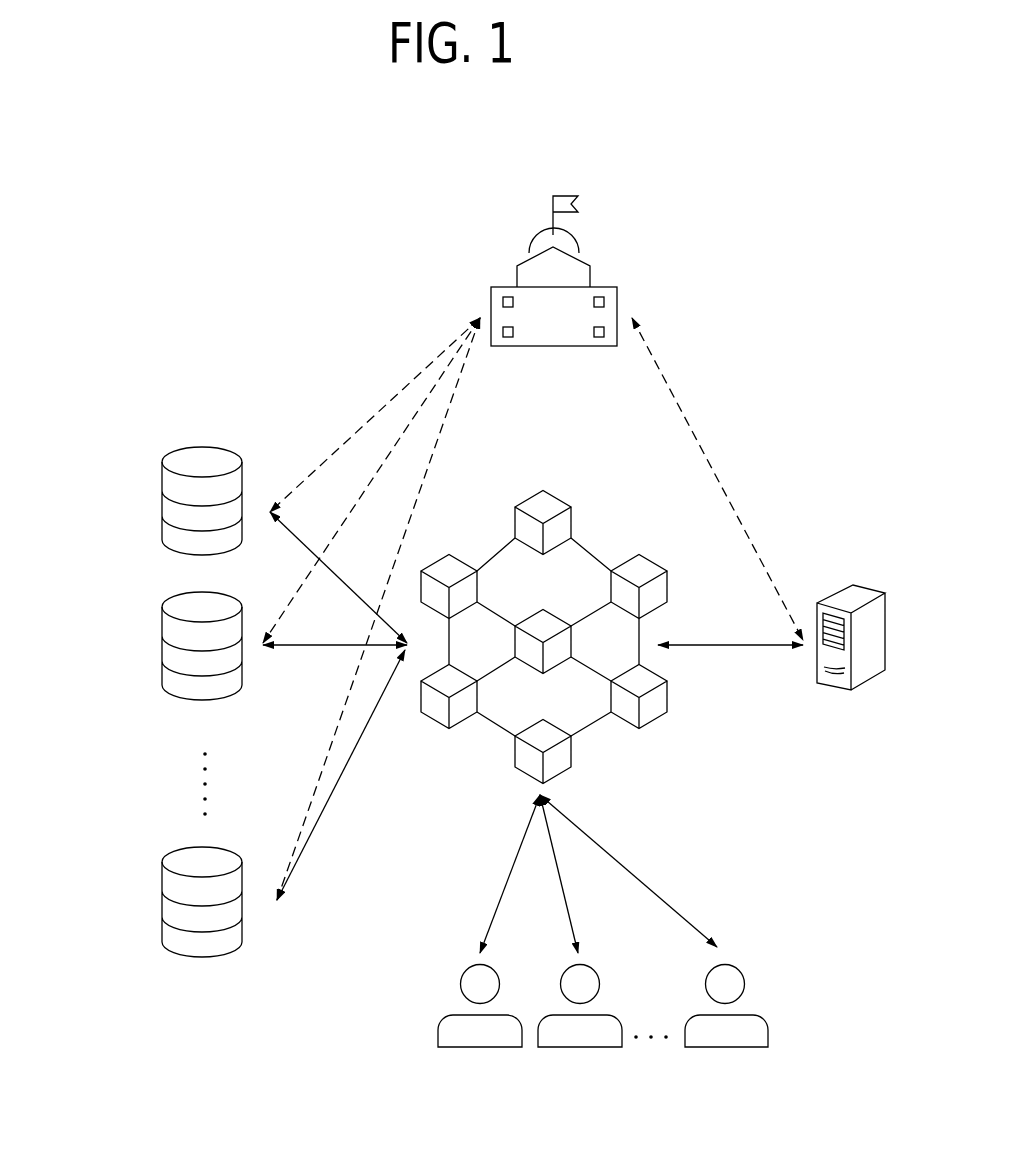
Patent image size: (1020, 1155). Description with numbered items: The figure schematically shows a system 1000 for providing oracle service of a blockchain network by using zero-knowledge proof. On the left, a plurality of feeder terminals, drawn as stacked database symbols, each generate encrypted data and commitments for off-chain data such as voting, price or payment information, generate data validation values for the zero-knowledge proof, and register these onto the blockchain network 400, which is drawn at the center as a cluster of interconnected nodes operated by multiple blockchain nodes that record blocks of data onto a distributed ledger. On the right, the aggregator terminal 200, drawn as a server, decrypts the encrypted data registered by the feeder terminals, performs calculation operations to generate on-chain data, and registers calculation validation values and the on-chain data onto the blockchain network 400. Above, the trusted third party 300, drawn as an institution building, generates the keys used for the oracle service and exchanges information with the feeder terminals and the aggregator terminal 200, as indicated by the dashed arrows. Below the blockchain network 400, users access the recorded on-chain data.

The system for providing oracle service 1000 is at (258, 333).
The aggregator terminal 200 is at (870, 587).
The trusted third party 300 is at (605, 287).
The blockchain network 400 is at (652, 560).